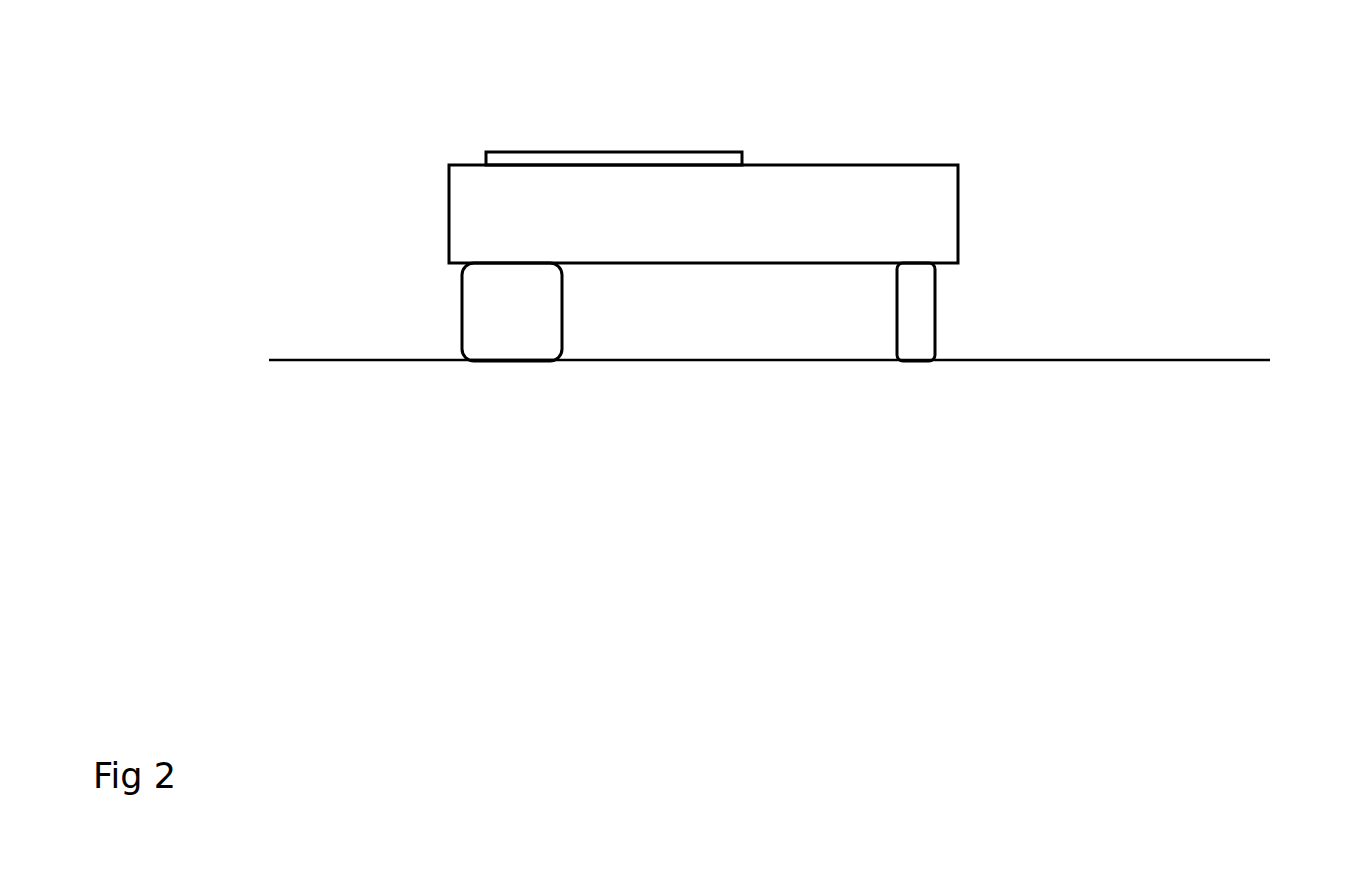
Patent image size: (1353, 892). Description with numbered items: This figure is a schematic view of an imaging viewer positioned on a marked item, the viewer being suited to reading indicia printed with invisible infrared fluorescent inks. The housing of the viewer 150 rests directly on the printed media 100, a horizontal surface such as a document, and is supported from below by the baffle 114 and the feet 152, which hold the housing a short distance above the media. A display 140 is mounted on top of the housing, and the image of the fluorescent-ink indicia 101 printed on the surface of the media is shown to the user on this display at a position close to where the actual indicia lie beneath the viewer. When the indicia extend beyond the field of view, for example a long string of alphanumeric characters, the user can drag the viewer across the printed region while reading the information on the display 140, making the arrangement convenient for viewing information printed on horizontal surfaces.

The printed media 100 is at (1262, 359).
The indicia 101 is at (507, 361).
The baffle 114 is at (462, 308).
The display 140 is at (657, 153).
The viewer 150 is at (925, 164).
The feet 152 is at (936, 311).